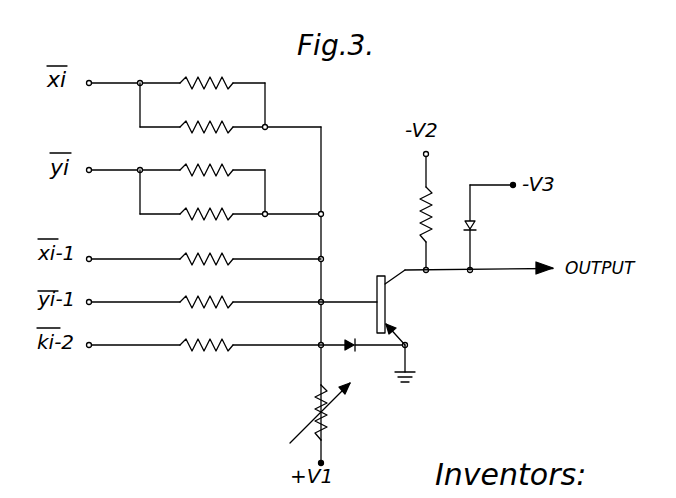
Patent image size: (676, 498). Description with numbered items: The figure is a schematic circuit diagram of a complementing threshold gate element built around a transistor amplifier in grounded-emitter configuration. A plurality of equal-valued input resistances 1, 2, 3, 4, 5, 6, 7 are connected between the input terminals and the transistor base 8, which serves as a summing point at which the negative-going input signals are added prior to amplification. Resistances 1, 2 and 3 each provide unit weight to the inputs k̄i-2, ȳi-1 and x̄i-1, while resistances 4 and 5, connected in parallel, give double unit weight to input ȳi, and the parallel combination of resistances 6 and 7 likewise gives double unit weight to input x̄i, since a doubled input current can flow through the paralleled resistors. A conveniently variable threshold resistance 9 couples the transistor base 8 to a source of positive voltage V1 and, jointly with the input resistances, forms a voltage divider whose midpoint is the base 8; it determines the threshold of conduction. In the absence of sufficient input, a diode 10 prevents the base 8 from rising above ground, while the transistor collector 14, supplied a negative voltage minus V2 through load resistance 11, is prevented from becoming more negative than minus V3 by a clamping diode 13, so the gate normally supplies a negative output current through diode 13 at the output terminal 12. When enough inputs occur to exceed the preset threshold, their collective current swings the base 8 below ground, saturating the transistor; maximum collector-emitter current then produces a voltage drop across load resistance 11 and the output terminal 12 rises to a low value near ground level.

The input resistance 1 is at (212, 349).
The input resistance 2 is at (212, 306).
The input resistance 3 is at (212, 263).
The input resistance 4 is at (212, 218).
The input resistance 5 is at (212, 174).
The input resistance 6 is at (212, 131).
The input resistance 7 is at (212, 87).
The transistor base 8 is at (376, 279).
The threshold resistance 9 is at (340, 419).
The diode 10 is at (353, 351).
The load resistance 11 is at (420, 212).
The output terminal 12 is at (510, 272).
The clamping diode 13 is at (482, 229).
The transistor collector 14 is at (392, 285).